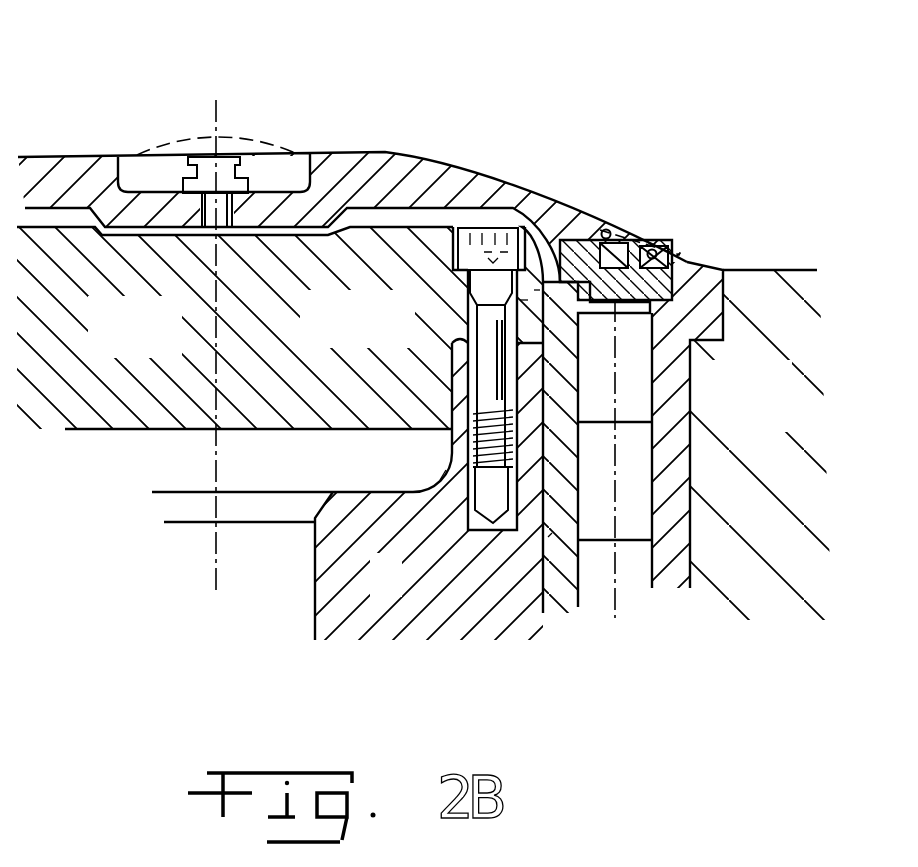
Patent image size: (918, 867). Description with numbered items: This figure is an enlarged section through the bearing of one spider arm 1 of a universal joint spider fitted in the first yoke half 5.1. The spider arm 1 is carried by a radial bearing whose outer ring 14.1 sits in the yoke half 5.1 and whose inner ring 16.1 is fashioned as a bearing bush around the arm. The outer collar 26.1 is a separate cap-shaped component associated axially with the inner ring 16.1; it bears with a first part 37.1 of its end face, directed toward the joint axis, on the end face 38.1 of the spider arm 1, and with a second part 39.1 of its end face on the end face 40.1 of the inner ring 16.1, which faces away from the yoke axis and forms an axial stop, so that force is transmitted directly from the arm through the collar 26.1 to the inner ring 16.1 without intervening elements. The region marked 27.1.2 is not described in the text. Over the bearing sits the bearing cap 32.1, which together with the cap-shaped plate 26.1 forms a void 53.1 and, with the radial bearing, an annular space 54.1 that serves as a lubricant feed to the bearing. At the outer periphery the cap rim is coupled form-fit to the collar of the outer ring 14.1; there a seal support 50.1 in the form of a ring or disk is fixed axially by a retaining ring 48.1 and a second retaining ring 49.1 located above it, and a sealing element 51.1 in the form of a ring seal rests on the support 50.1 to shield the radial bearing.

The spider arm 1 is at (396, 592).
The first yoke half 5.1 is at (782, 412).
The outer ring 14.1 is at (680, 510).
The inner ring 16.1 is at (548, 537).
The outer collar 26.1 is at (170, 347).
The rounded edge 27.1.2 is at (475, 492).
The bearing cap 32.1 is at (378, 167).
The first part of end face 37.1 is at (530, 300).
The end face of spider arm 38.1 is at (453, 345).
The second part of end face 39.1 is at (537, 290).
The end face of inner ring 40.1 is at (557, 240).
The retaining ring 48.1 is at (672, 277).
The second retaining ring 49.1 is at (618, 232).
The seal support 50.1 is at (655, 242).
The sealing element 51.1 is at (604, 228).
The void 53.1 is at (238, 219).
The annular space 54.1 is at (417, 215).